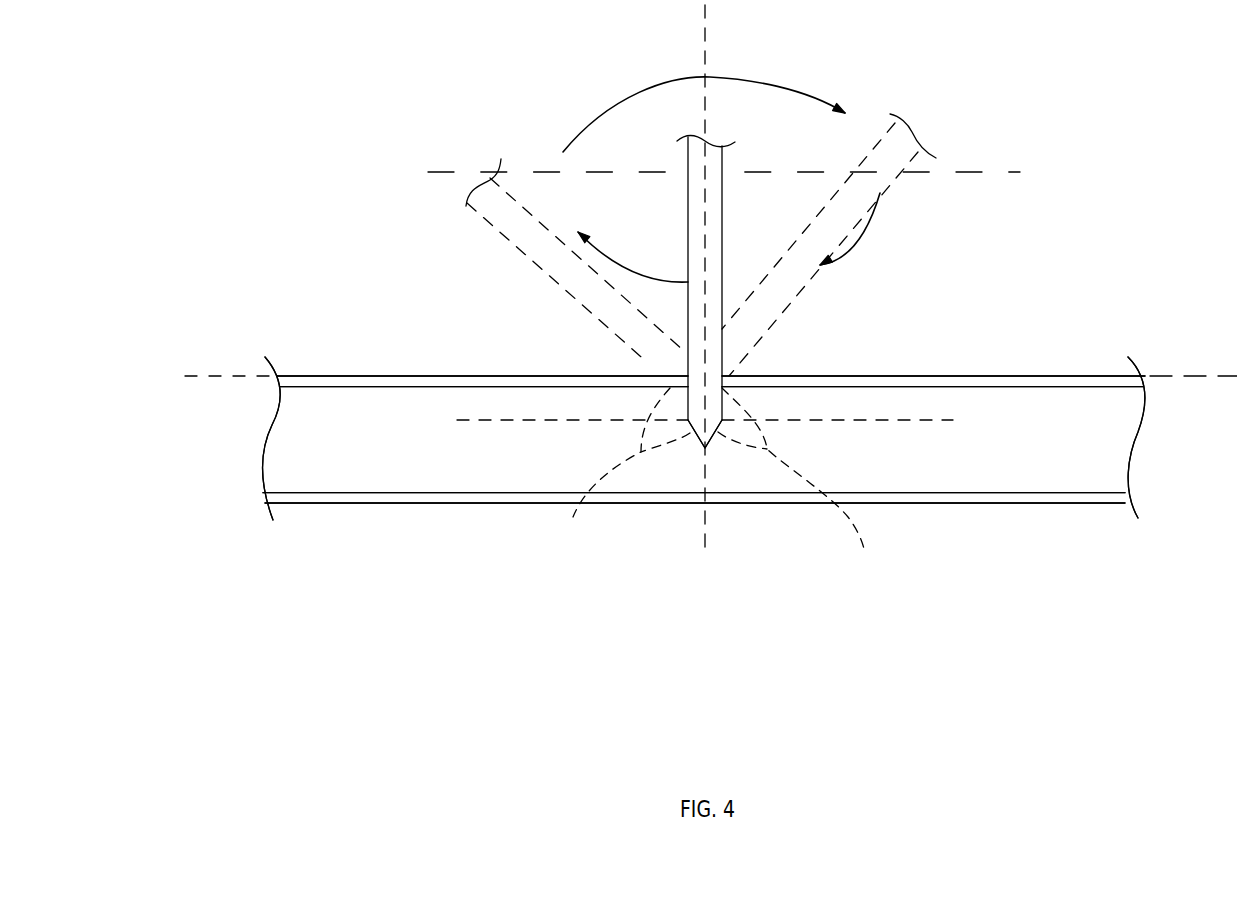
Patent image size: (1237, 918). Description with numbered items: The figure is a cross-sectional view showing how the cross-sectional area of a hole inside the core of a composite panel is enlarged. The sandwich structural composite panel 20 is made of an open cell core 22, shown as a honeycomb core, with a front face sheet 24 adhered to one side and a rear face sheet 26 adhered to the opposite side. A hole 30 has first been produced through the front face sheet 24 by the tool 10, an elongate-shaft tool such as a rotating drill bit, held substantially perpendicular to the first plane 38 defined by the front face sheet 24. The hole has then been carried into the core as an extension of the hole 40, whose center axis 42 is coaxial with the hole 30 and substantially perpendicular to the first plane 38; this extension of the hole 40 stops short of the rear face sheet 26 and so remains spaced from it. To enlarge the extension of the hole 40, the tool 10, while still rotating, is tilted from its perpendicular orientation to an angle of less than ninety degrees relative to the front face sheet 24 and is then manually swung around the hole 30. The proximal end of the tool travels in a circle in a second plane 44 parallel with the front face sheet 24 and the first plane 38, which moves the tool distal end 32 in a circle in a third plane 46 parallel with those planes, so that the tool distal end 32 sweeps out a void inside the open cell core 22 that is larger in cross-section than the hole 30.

The tool 10 is at (723, 209).
The sandwich structural composite panel 20 is at (1047, 376).
The open cell core 22 is at (1102, 452).
The front face sheet 24 is at (957, 376).
The rear face sheet 26 is at (992, 497).
The hole 30 is at (707, 372).
The tool distal end 32 is at (695, 432).
The first plane 38 is at (194, 376).
The extension of the hole 40 is at (703, 425).
The center axis 42 is at (705, 528).
The second plane 44 is at (444, 172).
The third plane 46 is at (488, 427).